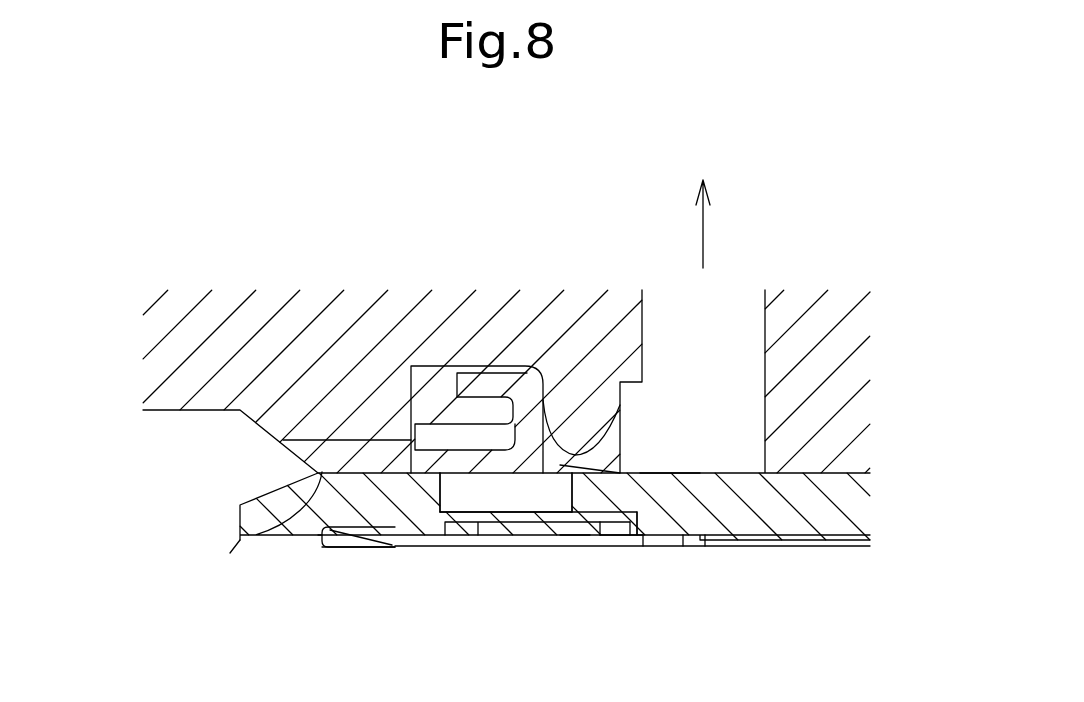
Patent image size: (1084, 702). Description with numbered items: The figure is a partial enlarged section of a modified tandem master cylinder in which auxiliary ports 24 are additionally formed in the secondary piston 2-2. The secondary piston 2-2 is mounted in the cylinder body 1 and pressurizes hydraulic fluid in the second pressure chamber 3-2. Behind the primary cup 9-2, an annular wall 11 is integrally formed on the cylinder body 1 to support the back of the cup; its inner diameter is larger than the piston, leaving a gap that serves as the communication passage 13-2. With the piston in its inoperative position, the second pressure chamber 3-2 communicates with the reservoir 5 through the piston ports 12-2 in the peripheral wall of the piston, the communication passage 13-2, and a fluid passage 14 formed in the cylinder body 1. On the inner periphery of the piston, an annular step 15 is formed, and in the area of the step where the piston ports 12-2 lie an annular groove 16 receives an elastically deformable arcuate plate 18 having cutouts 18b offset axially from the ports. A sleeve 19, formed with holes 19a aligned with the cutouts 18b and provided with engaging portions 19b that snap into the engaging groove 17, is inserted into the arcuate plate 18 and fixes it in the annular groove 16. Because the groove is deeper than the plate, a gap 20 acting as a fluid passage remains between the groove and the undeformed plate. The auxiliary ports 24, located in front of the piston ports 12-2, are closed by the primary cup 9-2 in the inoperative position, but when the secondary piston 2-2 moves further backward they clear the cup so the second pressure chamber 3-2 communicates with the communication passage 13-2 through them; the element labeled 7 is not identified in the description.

The cylinder body 1 is at (835, 397).
The secondary piston 2-2 is at (830, 547).
The second pressure chamber 3-2 is at (215, 501).
The reservoir 5 is at (706, 197).
The flange 7 is at (240, 545).
The primary cup 9-2 is at (484, 373).
The annular wall 11 is at (568, 440).
The piston ports 12-2 is at (428, 540).
The communication passage 13-2 is at (590, 463).
The fluid passage 14 is at (720, 338).
The annular step 15 is at (680, 546).
The annular groove 16 is at (618, 546).
The engaging groove 17 is at (390, 527).
The arcuate plate 18 is at (545, 558).
The cutouts 18b is at (655, 472).
The sleeve 19 is at (386, 558).
The holes 19a is at (477, 546).
The engaging portions 19b is at (330, 546).
The gap 20 is at (570, 546).
The auxiliary ports 24 is at (455, 512).